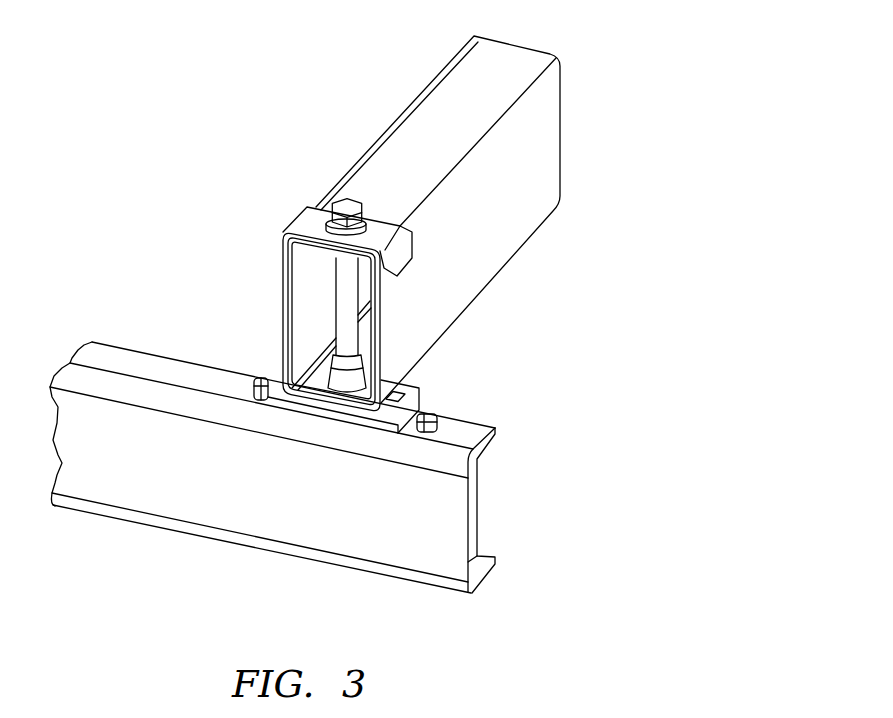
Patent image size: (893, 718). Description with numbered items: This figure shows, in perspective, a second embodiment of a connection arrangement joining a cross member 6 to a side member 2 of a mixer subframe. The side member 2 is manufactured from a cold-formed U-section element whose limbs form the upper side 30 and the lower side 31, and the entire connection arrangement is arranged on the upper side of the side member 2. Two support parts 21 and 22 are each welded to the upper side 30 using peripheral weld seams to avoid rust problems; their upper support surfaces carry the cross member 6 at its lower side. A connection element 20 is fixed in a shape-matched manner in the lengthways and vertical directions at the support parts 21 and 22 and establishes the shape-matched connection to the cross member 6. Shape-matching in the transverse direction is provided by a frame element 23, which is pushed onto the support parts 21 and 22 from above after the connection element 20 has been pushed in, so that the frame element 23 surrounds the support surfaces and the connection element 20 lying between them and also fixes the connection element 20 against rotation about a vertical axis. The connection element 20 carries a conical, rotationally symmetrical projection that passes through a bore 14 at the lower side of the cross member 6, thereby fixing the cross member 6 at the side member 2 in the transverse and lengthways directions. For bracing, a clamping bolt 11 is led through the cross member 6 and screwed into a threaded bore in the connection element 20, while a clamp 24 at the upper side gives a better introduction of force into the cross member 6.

The side member 2 is at (285, 484).
The cross member 6 is at (443, 110).
The bolt 11 is at (345, 206).
The bore 14 is at (366, 390).
The connection element 20 is at (338, 371).
The support part 21 is at (434, 414).
The support part 22 is at (252, 379).
The frame element 23 is at (416, 390).
The clamp 24 is at (303, 220).
The upper side 30 is at (146, 370).
The lower side 31 is at (490, 576).